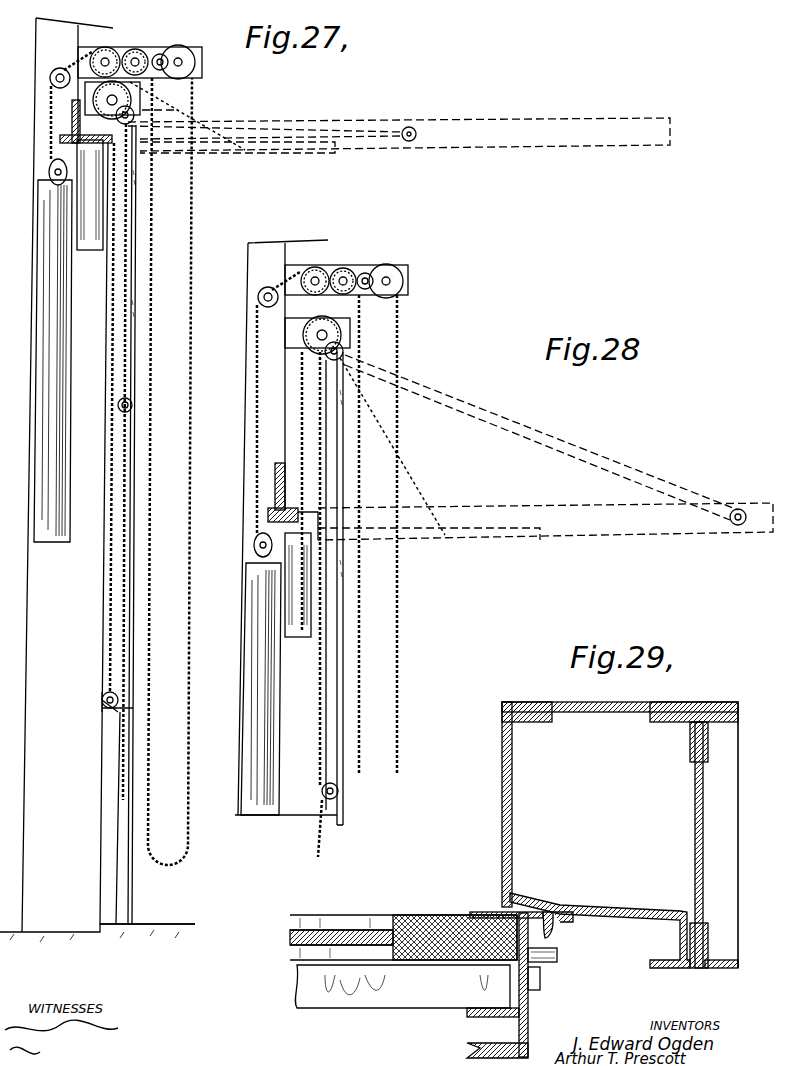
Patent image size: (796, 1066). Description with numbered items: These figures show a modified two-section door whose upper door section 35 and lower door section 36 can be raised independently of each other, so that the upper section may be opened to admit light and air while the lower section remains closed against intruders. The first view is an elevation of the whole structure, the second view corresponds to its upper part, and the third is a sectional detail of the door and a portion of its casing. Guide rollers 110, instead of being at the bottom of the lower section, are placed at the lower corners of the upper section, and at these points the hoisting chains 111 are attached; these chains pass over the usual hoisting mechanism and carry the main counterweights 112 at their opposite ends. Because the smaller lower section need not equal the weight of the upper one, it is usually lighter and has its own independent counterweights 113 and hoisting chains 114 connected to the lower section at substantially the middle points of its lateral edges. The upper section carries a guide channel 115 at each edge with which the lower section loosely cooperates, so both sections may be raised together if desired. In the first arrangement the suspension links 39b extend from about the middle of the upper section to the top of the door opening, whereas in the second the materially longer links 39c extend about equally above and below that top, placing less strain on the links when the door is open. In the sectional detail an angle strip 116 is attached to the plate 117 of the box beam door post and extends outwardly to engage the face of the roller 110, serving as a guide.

In FIG. 29, the upper door section 35 is at (423, 918).
In FIG. 27, the lower door section 36 is at (128, 880).
In FIG. 29, the lower door section 36 is at (423, 1005).
In FIG. 27, the suspension links 39b is at (129, 277).
In FIG. 28, the suspension links 39c is at (400, 402).
In FIG. 27, the guide rollers 110 is at (103, 707).
In FIG. 28, the guide rollers 110 is at (330, 791).
In FIG. 29, the guide rollers 110 is at (535, 972).
In FIG. 27, the hoisting chains 111 is at (108, 588).
In FIG. 28, the hoisting chains 111 is at (313, 843).
In FIG. 27, the main counterweights 112 is at (62, 377).
In FIG. 28, the main counterweights 112 is at (257, 745).
In FIG. 27, the independent counterweights 113 is at (88, 238).
In FIG. 28, the independent counterweights 113 is at (298, 623).
In FIG. 27, the hoisting chains 114 is at (178, 110).
In FIG. 28, the hoisting chains 114 is at (415, 475).
In FIG. 29, the guide channel 115 is at (528, 1023).
In FIG. 29, the angle strip 116 is at (556, 918).
In FIG. 29, the plate 117 is at (612, 905).